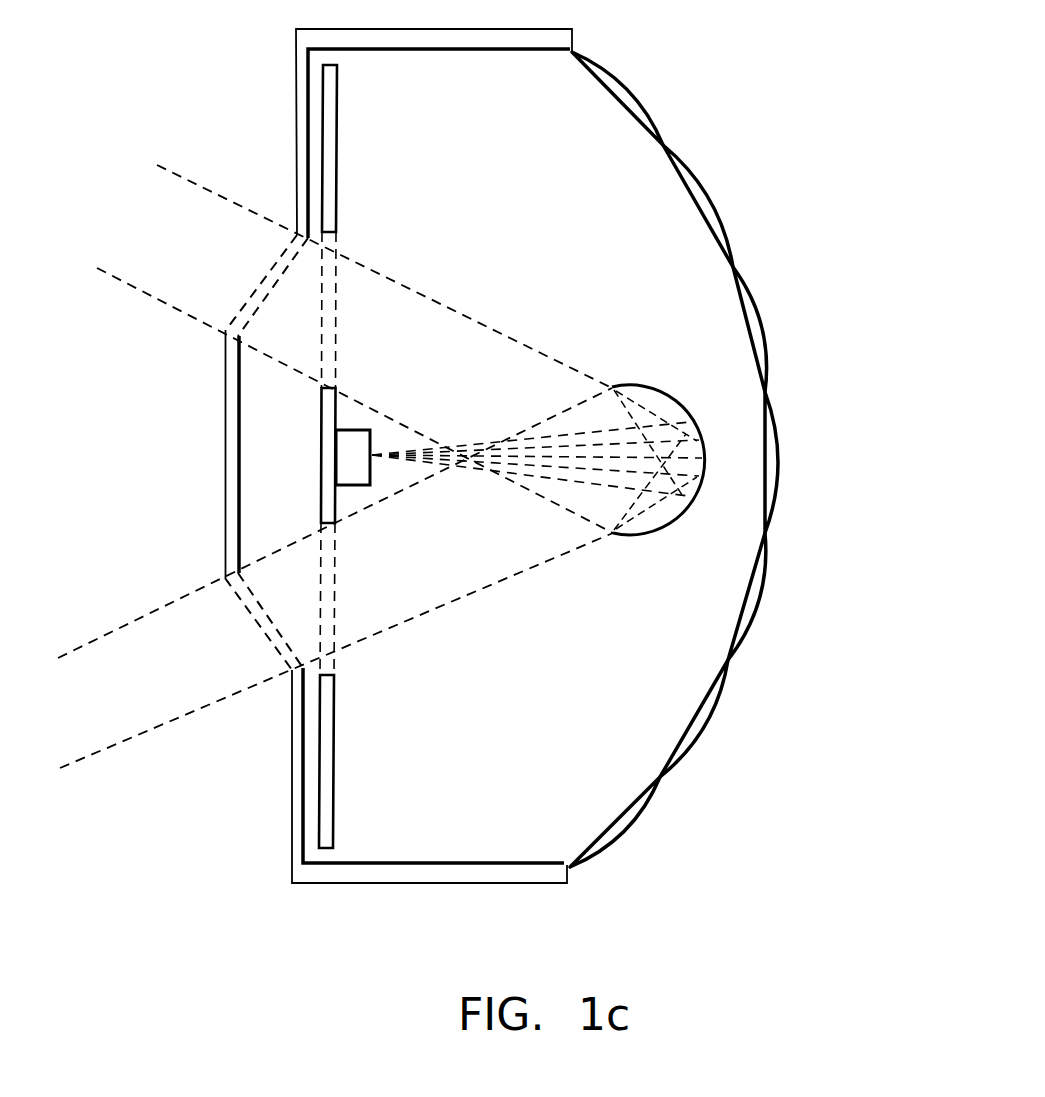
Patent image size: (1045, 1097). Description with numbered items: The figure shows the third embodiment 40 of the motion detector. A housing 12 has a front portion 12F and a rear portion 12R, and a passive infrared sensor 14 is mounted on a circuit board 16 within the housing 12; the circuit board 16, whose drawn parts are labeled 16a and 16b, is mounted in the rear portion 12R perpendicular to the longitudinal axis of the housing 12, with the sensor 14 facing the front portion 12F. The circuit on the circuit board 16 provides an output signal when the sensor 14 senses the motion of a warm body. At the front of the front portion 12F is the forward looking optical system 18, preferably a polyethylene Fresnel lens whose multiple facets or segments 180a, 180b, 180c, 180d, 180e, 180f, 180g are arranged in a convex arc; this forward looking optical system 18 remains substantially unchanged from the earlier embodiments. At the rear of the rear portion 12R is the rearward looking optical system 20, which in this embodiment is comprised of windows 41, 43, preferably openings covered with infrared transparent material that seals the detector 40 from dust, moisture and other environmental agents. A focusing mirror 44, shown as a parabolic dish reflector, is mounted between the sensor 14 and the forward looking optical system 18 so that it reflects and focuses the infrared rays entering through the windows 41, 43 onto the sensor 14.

The housing 12 is at (457, 887).
The rear portion 12R is at (399, 113).
The front portion 12F is at (544, 148).
The passive infrared sensor 14 is at (360, 437).
The circuit board 16 is at (366, 456).
The filter plate segment 16a is at (337, 343).
The filter plate segment 16b is at (337, 580).
The forward looking optical system 18 is at (720, 451).
The facet or segment 180a is at (632, 105).
The facet or segment 180b is at (697, 193).
The facet or segment 180c is at (757, 330).
The facet or segment 180d is at (772, 482).
The facet or segment 180e is at (760, 578).
The facet or segment 180f is at (710, 717).
The facet or segment 180g is at (630, 827).
The rearward looking optical system 20 is at (241, 249).
The third embodiment 40 is at (523, 504).
The window 41 is at (253, 293).
The window 43 is at (238, 608).
The focusing mirror 44 is at (674, 520).